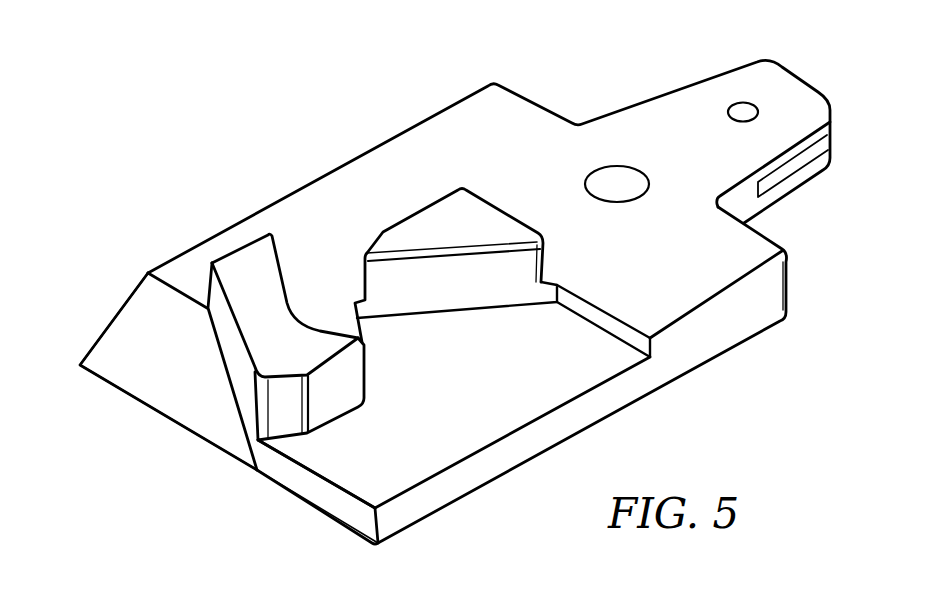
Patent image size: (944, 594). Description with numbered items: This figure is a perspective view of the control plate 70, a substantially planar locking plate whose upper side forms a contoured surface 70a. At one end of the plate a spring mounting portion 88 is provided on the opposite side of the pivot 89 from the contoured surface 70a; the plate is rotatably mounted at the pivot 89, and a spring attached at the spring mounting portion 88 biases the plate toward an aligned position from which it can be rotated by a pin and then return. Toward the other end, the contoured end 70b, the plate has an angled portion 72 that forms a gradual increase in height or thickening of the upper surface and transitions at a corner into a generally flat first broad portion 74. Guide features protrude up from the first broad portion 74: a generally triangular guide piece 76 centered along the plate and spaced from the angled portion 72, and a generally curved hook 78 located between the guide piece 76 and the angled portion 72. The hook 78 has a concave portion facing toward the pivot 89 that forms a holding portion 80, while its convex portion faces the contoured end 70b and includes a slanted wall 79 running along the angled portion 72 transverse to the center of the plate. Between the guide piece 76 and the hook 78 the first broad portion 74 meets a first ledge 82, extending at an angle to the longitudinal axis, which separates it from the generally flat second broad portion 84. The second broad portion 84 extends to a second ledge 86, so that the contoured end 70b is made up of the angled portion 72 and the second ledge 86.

The control plate 70 is at (158, 88).
The contoured surface 70a is at (100, 299).
The contoured end 70b is at (136, 434).
The angled portion 72 is at (132, 358).
The first broad portion 74 is at (333, 220).
The guide piece 76 is at (430, 222).
The hook 78 is at (282, 348).
The slanted wall 79 is at (203, 293).
The holding portion 80 is at (287, 287).
The first ledge 82 is at (360, 330).
The second broad portion 84 is at (437, 428).
The second ledge 86 is at (332, 497).
The spring mounting portion 88 is at (743, 110).
The pivot 89 is at (618, 182).